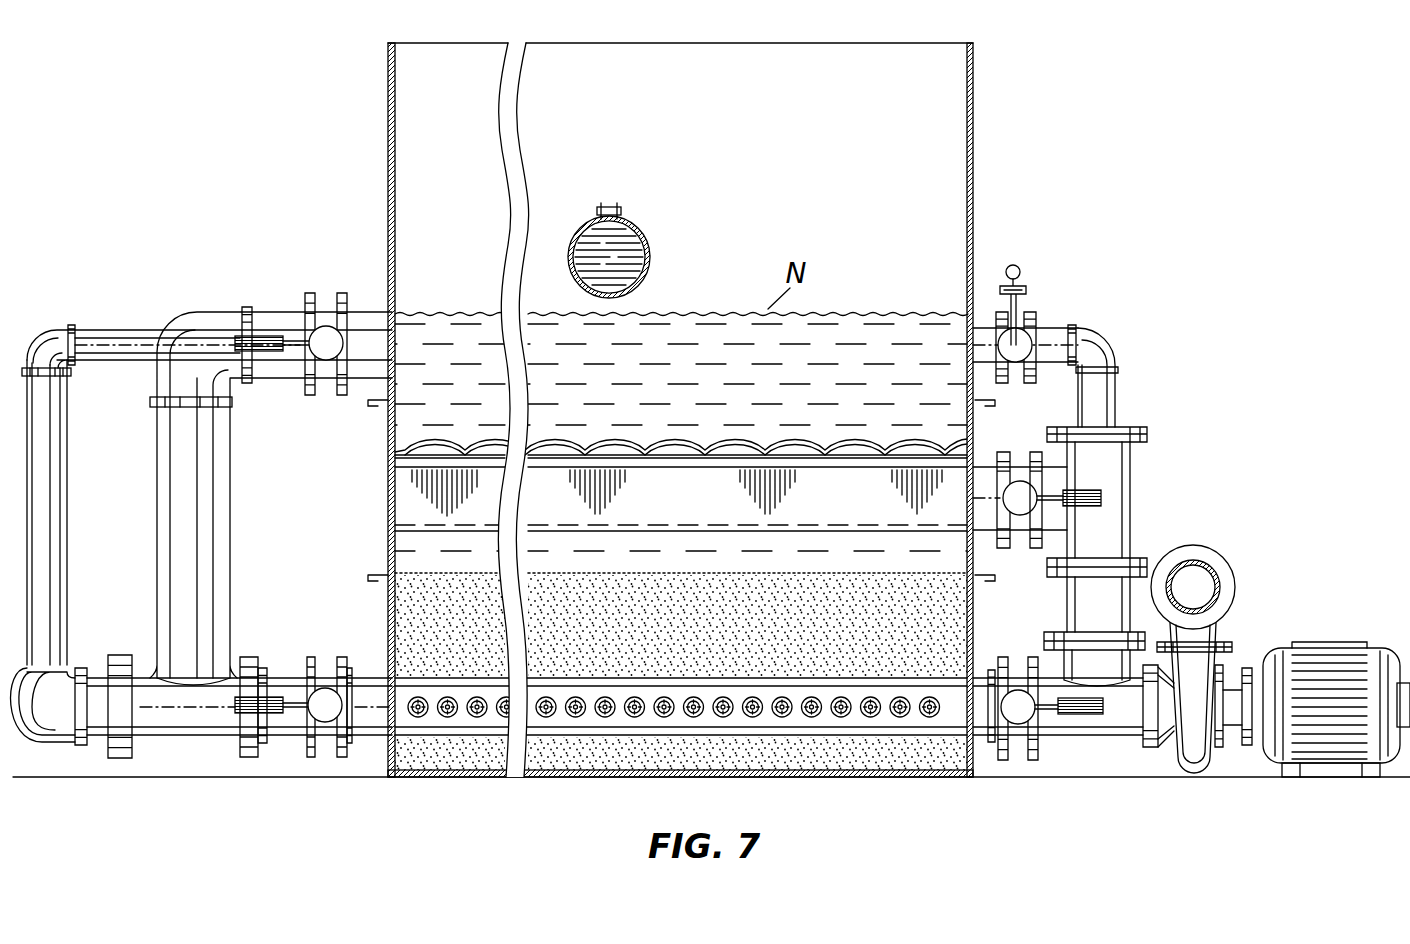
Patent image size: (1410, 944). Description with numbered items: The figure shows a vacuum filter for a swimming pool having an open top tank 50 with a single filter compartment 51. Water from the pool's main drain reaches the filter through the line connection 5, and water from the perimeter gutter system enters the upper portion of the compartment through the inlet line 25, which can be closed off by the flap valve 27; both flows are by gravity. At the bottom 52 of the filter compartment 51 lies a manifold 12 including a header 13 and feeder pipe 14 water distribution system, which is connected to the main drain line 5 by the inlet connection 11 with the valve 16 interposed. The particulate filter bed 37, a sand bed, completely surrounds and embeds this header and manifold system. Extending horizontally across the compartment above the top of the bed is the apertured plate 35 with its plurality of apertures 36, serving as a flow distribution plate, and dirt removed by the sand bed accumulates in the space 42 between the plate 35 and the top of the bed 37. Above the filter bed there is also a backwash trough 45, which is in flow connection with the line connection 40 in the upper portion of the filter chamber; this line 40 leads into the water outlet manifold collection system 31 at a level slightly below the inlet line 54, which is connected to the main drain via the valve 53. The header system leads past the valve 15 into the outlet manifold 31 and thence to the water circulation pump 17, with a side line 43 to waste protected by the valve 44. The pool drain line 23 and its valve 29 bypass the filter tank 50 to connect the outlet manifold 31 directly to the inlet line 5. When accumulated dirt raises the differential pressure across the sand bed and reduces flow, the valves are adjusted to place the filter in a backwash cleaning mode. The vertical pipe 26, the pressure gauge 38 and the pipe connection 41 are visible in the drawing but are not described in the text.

The line connection from main drain 5 is at (57, 693).
The inlet connection 11 is at (292, 688).
The manifold 12 is at (688, 667).
The header 13 is at (606, 692).
The feeder pipe 14 is at (930, 694).
The valve 15 is at (1020, 684).
The valve 16 is at (325, 680).
The water circulation pump 17 is at (1272, 633).
The pool drain line 23 is at (125, 340).
The inlet line 25 is at (638, 228).
The down pipe 26 is at (47, 487).
The valve 27 is at (656, 260).
The valve 29 is at (1025, 330).
The water outlet manifold collection system 31 is at (1097, 394).
The apertured plate 35 is at (622, 433).
The apertures 36 is at (768, 438).
The particulate filter bed 37 is at (826, 621).
The pressure gauge 38 is at (1022, 276).
The line connection 40 is at (980, 488).
The pipe connection 41 is at (1027, 525).
The space 42 is at (642, 565).
The side line to waste 43 is at (1230, 582).
The valve 44 is at (1205, 557).
The backwash trough 45 is at (862, 505).
The open top tank 50 is at (975, 147).
The filter compartment 51 is at (812, 148).
The bottom 52 is at (470, 776).
The valve 53 is at (322, 318).
The inlet line 54 is at (380, 335).